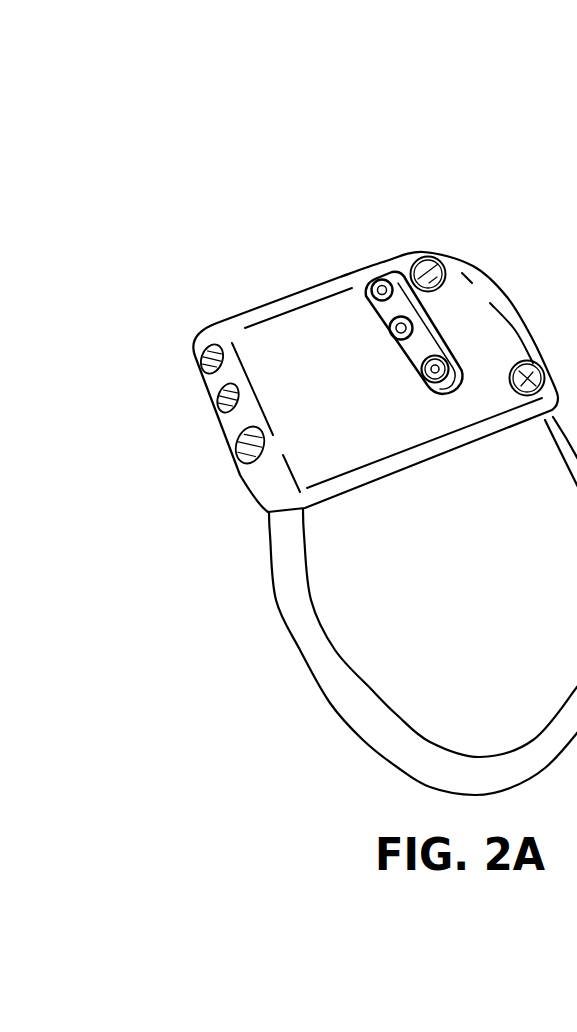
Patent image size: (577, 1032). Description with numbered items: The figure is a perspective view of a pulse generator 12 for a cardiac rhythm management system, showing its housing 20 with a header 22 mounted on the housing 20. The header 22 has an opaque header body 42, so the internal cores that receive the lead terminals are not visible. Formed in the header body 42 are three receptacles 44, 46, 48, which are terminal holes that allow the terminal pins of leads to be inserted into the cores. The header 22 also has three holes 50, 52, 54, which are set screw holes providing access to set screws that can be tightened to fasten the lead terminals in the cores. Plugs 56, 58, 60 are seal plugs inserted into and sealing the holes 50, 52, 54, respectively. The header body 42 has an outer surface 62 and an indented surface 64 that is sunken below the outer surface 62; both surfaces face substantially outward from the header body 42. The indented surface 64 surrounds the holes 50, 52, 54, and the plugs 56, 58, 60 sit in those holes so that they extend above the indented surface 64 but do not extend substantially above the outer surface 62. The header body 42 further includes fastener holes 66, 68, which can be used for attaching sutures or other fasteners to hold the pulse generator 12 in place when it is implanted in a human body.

The pulse generator 12 is at (205, 190).
The housing 20 is at (316, 699).
The header 22 is at (302, 286).
The header body 42 is at (486, 320).
The receptacle 44 is at (238, 448).
The receptacle 46 is at (218, 401).
The receptacle 48 is at (203, 362).
The hole 50 is at (432, 372).
The hole 52 is at (399, 342).
The hole 54 is at (366, 293).
The plug 56 is at (436, 373).
The plug 58 is at (402, 318).
The plug 60 is at (383, 283).
The outer surface 62 is at (283, 335).
The indented surface 64 is at (460, 340).
The fastener hole 66 is at (531, 362).
The fastener hole 68 is at (438, 270).